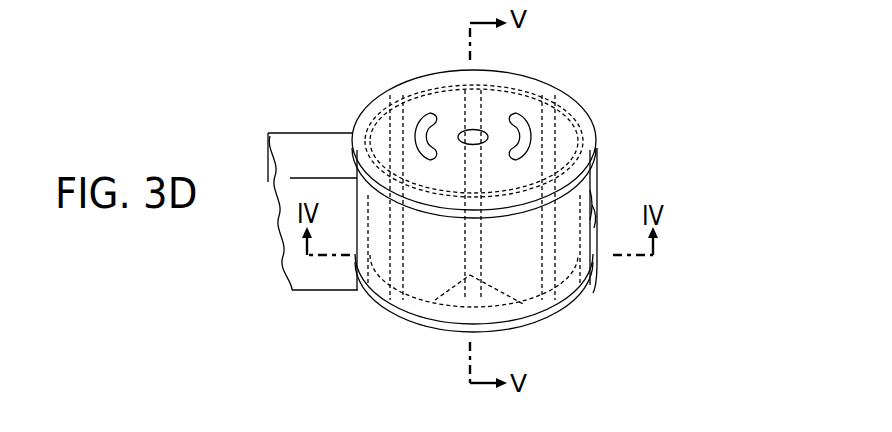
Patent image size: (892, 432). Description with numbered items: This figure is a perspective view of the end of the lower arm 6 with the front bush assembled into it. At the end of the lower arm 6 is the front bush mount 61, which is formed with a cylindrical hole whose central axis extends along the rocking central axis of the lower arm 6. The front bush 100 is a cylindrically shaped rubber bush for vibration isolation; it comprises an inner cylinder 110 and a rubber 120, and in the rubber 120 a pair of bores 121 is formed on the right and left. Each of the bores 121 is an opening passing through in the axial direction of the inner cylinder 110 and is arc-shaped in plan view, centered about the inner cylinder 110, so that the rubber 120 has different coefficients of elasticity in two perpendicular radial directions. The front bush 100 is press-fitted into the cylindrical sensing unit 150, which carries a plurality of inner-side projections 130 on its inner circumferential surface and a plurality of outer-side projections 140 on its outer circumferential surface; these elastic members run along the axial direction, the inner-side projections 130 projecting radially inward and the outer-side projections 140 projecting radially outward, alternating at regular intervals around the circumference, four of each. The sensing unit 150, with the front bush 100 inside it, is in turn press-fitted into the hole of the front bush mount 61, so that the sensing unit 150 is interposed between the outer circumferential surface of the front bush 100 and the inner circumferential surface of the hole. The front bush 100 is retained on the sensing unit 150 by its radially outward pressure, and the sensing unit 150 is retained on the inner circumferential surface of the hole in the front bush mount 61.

The lower arm 6 is at (302, 184).
The front bush mount 61 is at (639, 189).
The front bush 100 is at (487, 190).
The inner cylinder 110 is at (495, 88).
The rubber 120 is at (459, 124).
The bores 121 is at (459, 103).
The inner-side projections 130 is at (474, 304).
The outer-side projections 140 is at (505, 170).
The sensing unit 150 is at (643, 169).